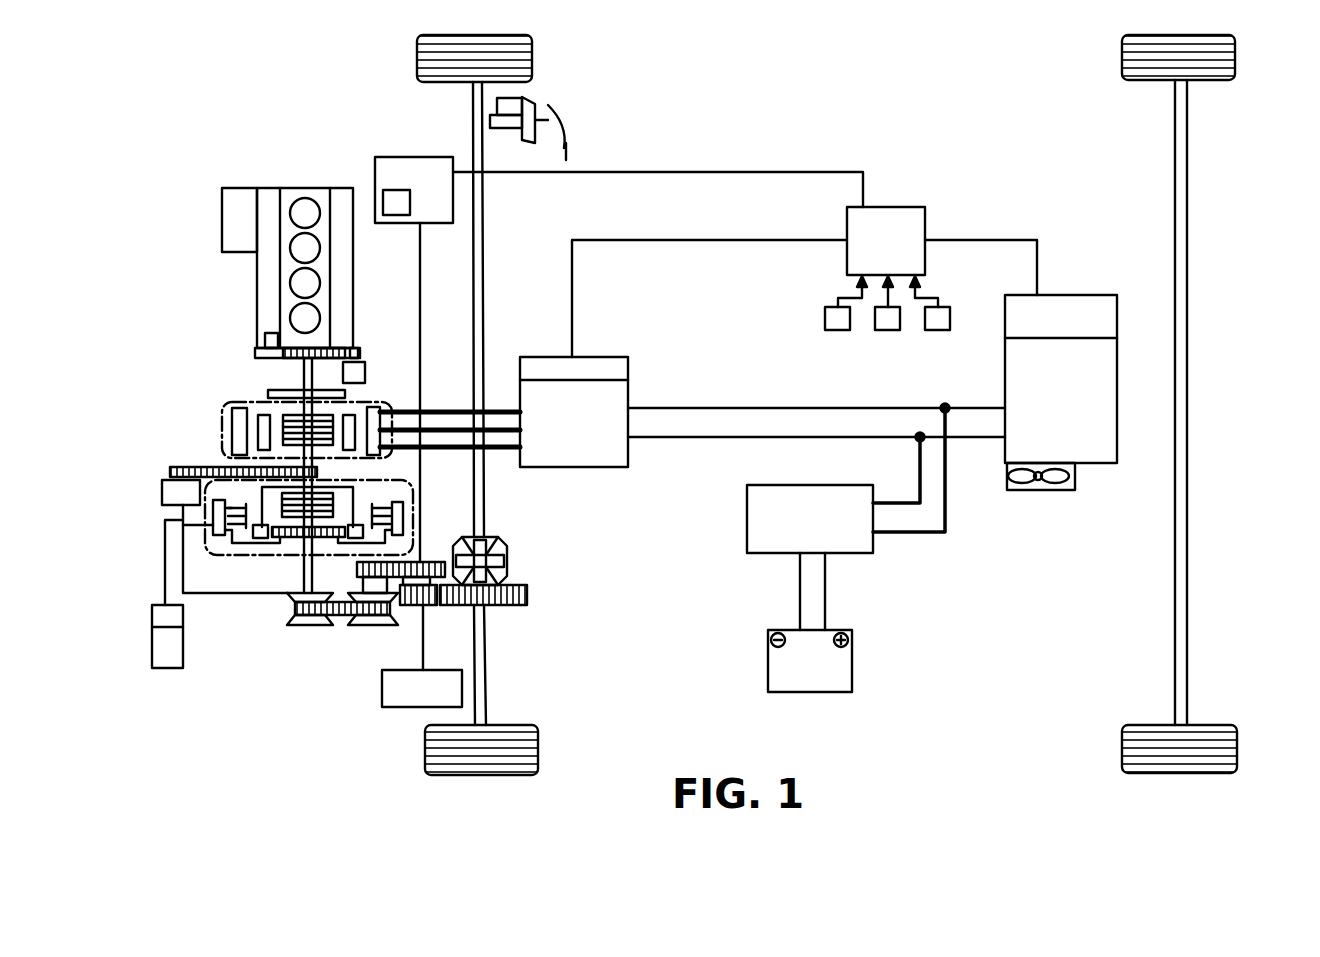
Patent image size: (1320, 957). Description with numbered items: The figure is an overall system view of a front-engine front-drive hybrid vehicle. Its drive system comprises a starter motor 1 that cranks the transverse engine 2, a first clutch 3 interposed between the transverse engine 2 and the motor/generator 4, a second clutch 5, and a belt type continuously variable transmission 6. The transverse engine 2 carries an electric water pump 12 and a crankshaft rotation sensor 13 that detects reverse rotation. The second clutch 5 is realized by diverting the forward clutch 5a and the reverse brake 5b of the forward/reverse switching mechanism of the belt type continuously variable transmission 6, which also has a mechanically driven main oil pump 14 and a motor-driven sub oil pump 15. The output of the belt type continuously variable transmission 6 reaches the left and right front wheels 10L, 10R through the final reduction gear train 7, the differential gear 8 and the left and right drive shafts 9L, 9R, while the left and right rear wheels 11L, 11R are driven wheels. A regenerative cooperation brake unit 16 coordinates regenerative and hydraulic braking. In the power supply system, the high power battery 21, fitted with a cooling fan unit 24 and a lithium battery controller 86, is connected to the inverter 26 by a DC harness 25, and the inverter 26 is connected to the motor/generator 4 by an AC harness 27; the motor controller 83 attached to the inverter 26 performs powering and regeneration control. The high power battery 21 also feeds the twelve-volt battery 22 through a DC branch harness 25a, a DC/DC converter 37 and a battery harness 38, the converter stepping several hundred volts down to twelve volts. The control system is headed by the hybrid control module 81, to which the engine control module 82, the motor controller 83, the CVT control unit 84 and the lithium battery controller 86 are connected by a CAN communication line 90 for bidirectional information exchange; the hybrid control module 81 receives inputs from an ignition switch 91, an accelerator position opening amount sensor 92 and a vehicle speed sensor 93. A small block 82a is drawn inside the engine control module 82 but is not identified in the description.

The starter motor 1 is at (358, 372).
The transverse engine 2 is at (322, 190).
The first clutch 3 is at (292, 423).
The motor/generator 4 is at (240, 430).
The second clutch 5 is at (218, 543).
The forward clutch 5a is at (325, 493).
The reverse brake 5b is at (237, 533).
The belt type continuously variable transmission 6 is at (313, 625).
The final reduction gear train 7 is at (436, 610).
The differential gear 8 is at (493, 548).
The right drive shaft 9R is at (484, 207).
The left drive shaft 9L is at (486, 680).
The right front wheel 10R is at (417, 56).
The left front wheel 10L is at (425, 745).
The right rear wheel 11R is at (1235, 52).
The left rear wheel 11L is at (1237, 745).
The electric water pump 12 is at (230, 196).
The crankshaft rotation sensor 13 is at (268, 338).
The main oil pump 14 is at (172, 490).
The sub oil pump 15 is at (170, 645).
The regenerative cooperation brake unit 16 is at (528, 103).
The high power battery 21 is at (1106, 362).
The 12V battery 22 is at (782, 680).
The cooling fan unit 24 is at (1040, 478).
The DC harness 25 is at (690, 437).
The DC branch harness 25a is at (948, 485).
The inverter 26 is at (578, 467).
The AC harness 27 is at (450, 410).
The DC/DC converter 37 is at (747, 542).
The battery harness 38 is at (820, 592).
The hybrid control module 81 is at (885, 207).
The engine control module 82 is at (388, 157).
The engine controller memory 82a is at (396, 215).
The motor controller 83 is at (535, 357).
The CVT control unit 84 is at (382, 690).
The lithium battery controller 86 is at (1103, 318).
The CAN communication line 90 is at (818, 240).
The ignition switch 91 is at (838, 330).
The accelerator position opening amount sensor 92 is at (888, 330).
The vehicle speed sensor 93 is at (938, 330).